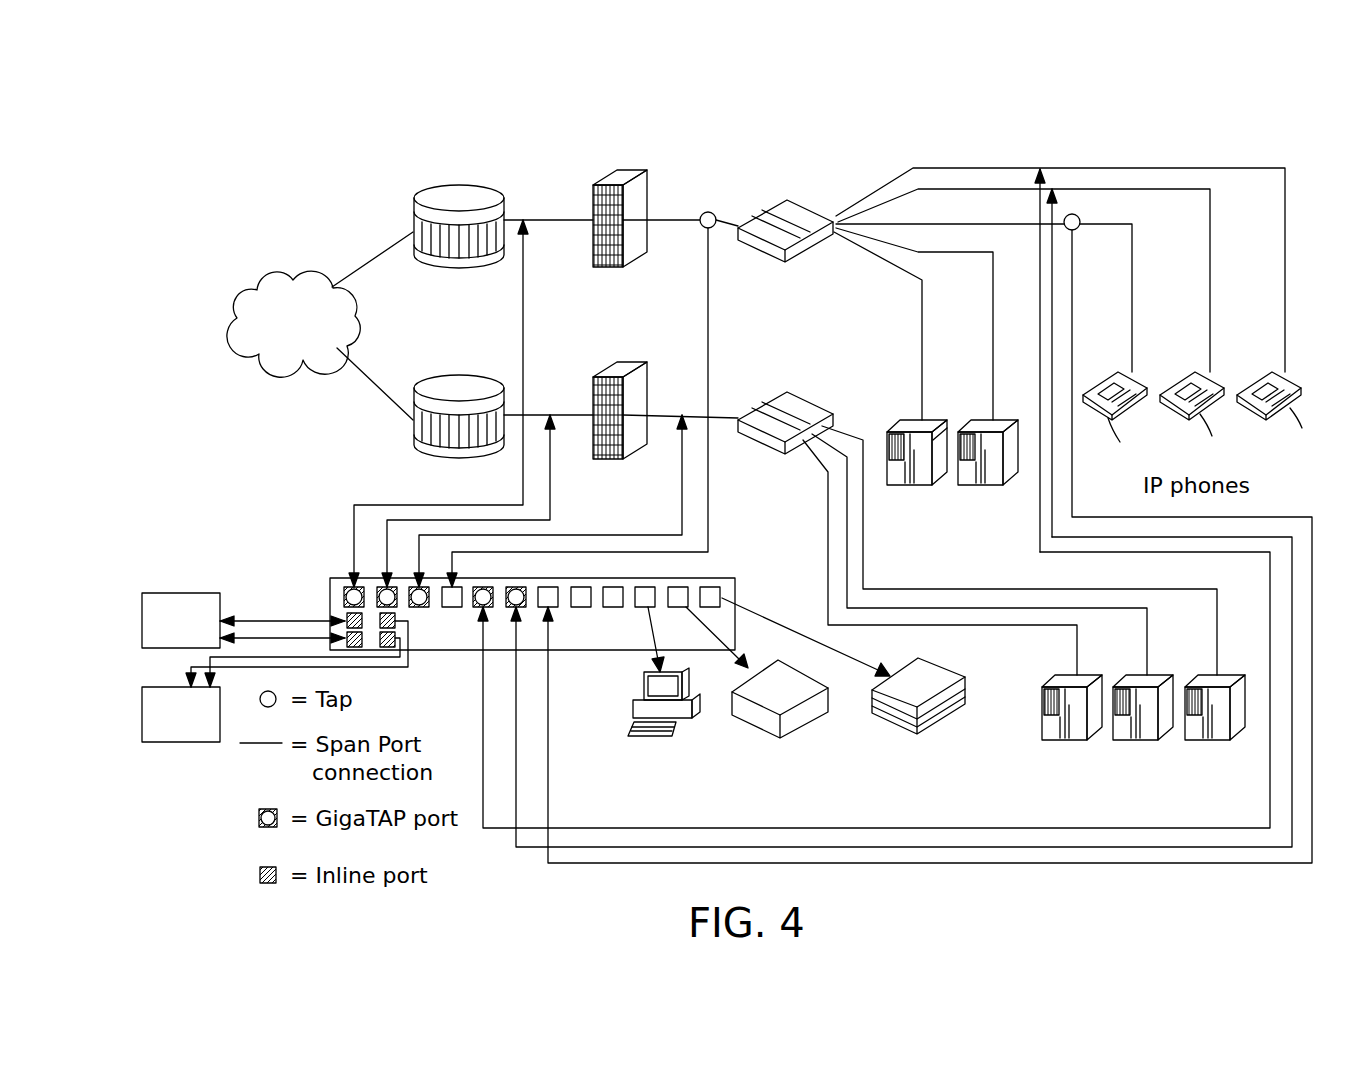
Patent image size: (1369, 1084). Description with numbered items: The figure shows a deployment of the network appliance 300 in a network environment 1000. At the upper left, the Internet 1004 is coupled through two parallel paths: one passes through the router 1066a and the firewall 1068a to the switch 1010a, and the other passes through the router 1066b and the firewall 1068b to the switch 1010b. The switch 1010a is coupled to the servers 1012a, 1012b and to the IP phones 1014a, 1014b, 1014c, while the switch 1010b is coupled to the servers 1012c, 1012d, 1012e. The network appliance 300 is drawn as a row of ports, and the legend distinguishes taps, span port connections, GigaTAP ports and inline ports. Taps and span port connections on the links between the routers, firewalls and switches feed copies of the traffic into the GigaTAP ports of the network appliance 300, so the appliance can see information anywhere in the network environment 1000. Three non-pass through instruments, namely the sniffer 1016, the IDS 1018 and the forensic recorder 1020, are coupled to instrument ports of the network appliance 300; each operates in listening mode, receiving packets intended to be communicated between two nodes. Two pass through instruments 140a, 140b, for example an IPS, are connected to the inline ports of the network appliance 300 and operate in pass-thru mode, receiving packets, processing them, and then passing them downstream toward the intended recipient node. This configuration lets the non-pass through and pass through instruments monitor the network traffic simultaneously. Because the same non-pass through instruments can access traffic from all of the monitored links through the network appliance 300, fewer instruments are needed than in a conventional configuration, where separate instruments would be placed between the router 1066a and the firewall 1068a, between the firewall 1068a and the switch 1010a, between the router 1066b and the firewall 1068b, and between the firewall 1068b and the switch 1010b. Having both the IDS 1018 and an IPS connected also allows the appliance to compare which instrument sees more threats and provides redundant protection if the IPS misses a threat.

The network environment 1000 is at (1152, 97).
The Internet 1004 is at (297, 277).
The router 1066a is at (457, 185).
The router 1066b is at (460, 375).
The firewall 1068a is at (606, 180).
The firewall 1068b is at (606, 372).
The switch 1010a is at (774, 206).
The switch 1010b is at (772, 400).
The server 1012a is at (895, 486).
The server 1012b is at (1010, 486).
The server 1012c is at (1055, 741).
The server 1012d is at (1128, 741).
The server 1012e is at (1236, 741).
The IP phone 1014a is at (1121, 419).
The IP phone 1014b is at (1204, 416).
The IP phone 1014c is at (1286, 413).
The sniffer 1016 is at (642, 690).
The IDS 1018 is at (745, 727).
The forensic recorder 1020 is at (876, 718).
The network appliance 300 is at (330, 615).
The pass through instrument 140a is at (142, 613).
The pass through instrument 140b is at (142, 707).